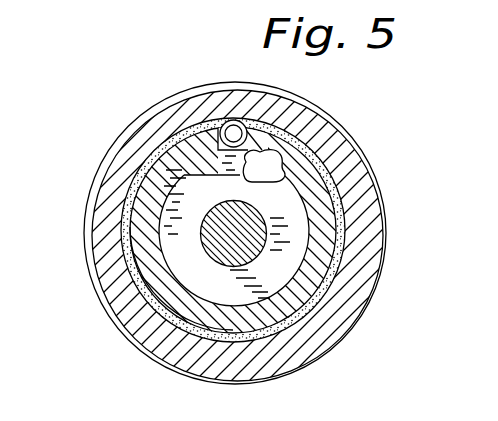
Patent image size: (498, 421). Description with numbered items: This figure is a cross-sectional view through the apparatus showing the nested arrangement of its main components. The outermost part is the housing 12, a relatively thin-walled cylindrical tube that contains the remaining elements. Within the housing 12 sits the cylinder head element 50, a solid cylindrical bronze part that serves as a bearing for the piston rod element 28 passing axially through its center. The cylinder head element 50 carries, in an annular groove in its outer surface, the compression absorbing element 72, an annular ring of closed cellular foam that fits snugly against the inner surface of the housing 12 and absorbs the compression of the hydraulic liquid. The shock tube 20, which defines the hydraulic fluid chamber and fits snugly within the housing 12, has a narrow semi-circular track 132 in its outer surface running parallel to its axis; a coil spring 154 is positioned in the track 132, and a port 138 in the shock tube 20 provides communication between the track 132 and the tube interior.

The housing 12 is at (350, 148).
The shock tube 20 is at (140, 207).
The piston rod element 28 is at (266, 259).
The cylinder head element 50 is at (172, 133).
The compression absorbing element 72 is at (343, 229).
The track 132 is at (252, 130).
The port 138 is at (283, 172).
The coil spring 154 is at (231, 120).